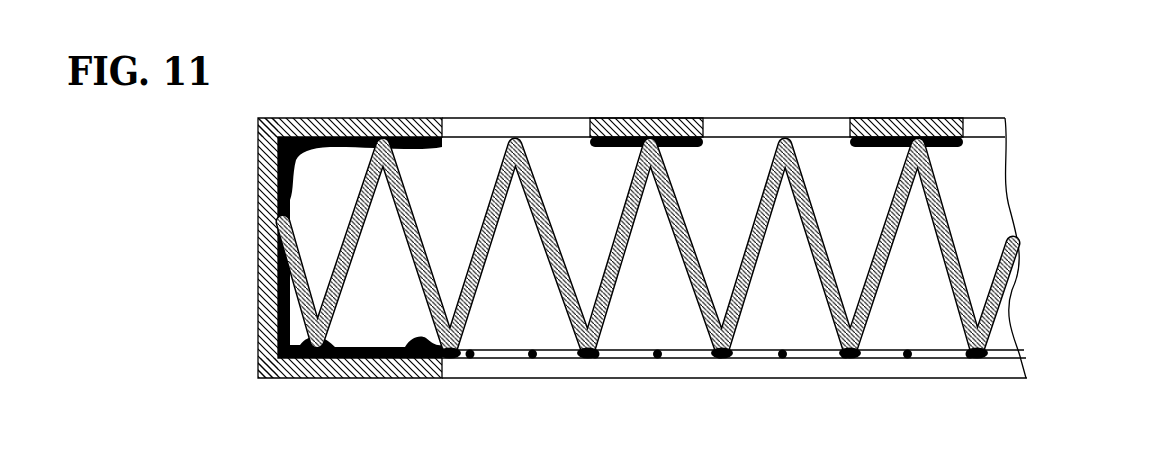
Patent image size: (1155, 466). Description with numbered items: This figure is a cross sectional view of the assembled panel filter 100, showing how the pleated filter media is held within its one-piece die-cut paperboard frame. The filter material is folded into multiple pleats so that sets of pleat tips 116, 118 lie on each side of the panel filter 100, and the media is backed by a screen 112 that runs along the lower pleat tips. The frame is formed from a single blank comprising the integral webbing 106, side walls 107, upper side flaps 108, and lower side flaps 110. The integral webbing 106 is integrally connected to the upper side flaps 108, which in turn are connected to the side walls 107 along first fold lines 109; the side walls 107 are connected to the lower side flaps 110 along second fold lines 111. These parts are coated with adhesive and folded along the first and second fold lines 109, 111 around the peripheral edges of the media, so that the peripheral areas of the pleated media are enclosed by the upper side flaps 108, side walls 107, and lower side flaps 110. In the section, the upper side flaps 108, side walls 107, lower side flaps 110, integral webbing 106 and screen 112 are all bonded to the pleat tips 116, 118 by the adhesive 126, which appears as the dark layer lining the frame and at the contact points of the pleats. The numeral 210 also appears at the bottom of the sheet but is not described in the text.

The panel filter 100 is at (1036, 96).
The integral webbing 106 is at (641, 118).
The side walls 107 is at (258, 262).
The upper side flaps 108 is at (338, 118).
The first fold lines 109 is at (258, 118).
The lower side flaps 110 is at (303, 379).
The second fold lines 111 is at (258, 378).
The screen 112 is at (538, 360).
The pleat tips 116 is at (541, 155).
The pleat tips 118 is at (702, 346).
The adhesive 126 is at (403, 150).
The substrate 210 is at (790, 462).